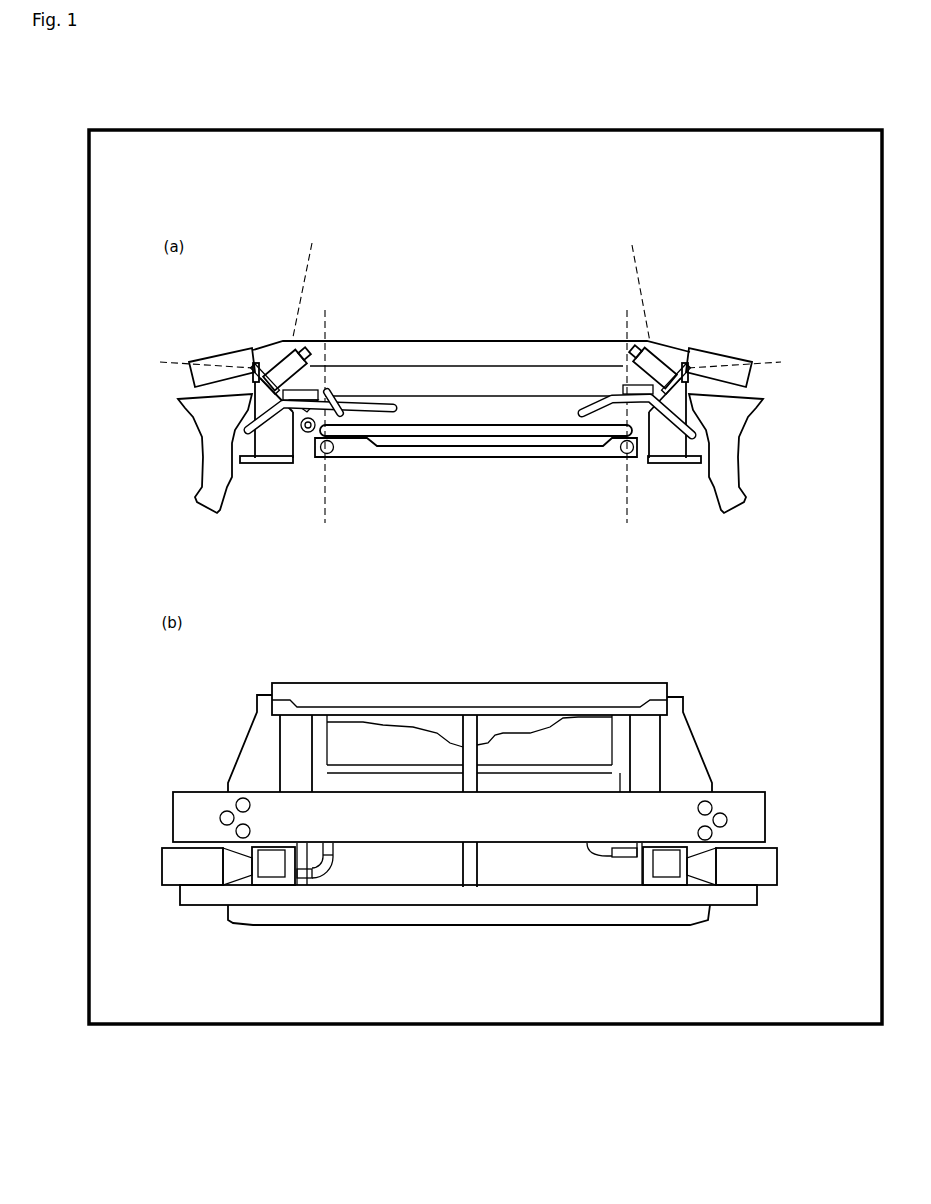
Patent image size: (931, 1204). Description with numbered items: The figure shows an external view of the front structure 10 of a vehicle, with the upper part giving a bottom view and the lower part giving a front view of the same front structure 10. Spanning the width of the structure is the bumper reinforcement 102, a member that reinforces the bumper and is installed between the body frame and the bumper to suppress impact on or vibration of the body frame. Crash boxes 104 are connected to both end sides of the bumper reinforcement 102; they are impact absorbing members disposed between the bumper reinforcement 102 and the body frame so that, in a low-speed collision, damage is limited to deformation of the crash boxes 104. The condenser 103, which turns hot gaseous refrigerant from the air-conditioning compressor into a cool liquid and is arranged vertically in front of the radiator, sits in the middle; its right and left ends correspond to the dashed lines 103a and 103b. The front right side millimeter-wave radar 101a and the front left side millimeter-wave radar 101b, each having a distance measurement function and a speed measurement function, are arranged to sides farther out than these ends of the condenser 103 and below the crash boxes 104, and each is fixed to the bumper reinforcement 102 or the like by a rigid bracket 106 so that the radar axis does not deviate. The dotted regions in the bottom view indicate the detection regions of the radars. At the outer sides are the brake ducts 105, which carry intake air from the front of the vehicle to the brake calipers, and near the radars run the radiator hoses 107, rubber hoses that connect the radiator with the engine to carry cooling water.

The front structure 10 is at (553, 274).
The front right side millimeter-wave radar 101a is at (288, 365).
The front left side millimeter-wave radar 101b is at (655, 375).
The bumper reinforcement 102 is at (478, 355).
The condenser 103 is at (495, 433).
The dashed line indicating the right end of the condenser 103a is at (327, 473).
The dashed line indicating the left end of the condenser 103b is at (627, 478).
The crash box 104 is at (275, 445).
The brake duct 105 is at (212, 475).
The bracket 106 is at (253, 353).
The radiator hose 107 is at (343, 405).